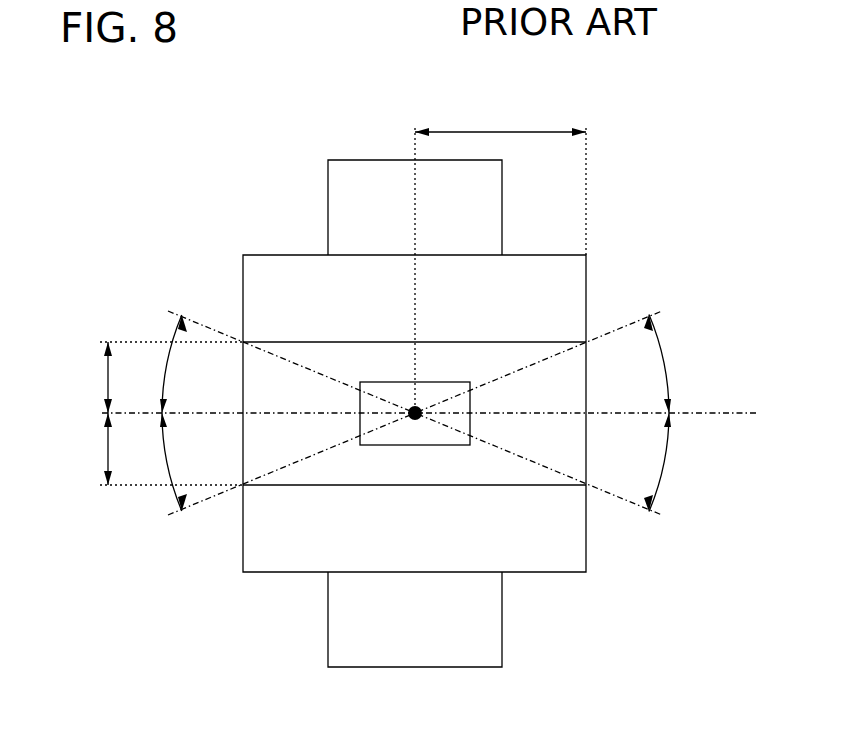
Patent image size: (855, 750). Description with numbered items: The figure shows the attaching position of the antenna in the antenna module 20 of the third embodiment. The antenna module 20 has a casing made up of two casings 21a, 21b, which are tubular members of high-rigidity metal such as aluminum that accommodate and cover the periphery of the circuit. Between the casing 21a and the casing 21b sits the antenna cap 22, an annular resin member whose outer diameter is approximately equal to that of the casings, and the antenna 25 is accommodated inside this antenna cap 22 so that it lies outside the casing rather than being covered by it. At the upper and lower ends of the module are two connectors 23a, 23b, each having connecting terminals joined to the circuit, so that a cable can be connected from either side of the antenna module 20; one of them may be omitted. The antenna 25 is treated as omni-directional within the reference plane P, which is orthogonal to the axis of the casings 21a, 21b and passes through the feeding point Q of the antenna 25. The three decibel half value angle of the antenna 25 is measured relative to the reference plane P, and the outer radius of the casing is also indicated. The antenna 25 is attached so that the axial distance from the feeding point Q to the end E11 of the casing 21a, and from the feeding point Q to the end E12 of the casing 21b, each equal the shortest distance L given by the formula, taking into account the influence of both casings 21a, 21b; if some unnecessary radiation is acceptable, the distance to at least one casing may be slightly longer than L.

The antenna module 20 is at (148, 146).
The casing 21a is at (573, 287).
The casing 21b is at (573, 541).
The antenna cap 22 is at (573, 378).
The connector 23a is at (346, 207).
The connector 23b is at (348, 621).
The antenna 25 is at (378, 382).
The end of casing 21a E11 is at (282, 342).
The end of casing 21b E12 is at (281, 485).
The feeding point Q is at (415, 420).
The reference plane P is at (742, 413).
The shortest distance L is at (99, 413).